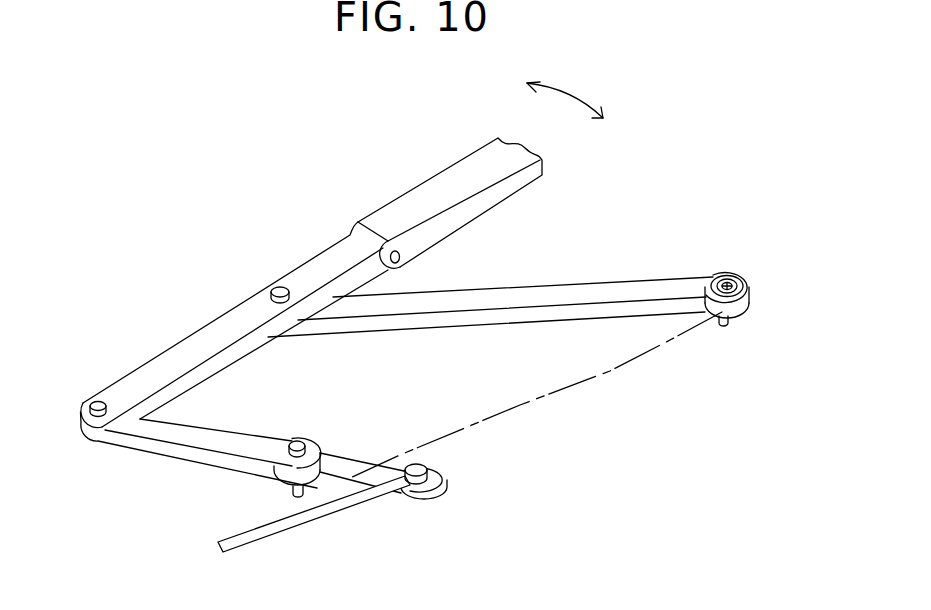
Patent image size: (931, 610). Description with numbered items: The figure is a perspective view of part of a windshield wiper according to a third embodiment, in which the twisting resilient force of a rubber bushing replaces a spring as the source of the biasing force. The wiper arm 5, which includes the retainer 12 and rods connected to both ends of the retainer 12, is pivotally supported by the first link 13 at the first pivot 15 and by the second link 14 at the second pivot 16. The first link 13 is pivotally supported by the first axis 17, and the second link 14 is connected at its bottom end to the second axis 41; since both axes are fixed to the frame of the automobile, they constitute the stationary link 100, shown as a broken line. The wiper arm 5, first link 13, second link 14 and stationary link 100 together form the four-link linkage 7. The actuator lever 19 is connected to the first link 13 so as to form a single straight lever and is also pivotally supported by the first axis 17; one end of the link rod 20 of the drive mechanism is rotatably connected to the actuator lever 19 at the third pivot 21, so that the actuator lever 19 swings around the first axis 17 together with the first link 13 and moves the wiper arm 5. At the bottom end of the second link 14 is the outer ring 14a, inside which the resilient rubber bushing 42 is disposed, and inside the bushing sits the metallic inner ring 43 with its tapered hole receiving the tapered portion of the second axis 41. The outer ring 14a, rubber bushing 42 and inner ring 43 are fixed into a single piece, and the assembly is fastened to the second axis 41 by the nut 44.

The wiper arm 5 is at (399, 176).
The four-link linkage 7 is at (155, 463).
The retainer 12 is at (328, 258).
The first link 13 is at (228, 442).
The second link 14 is at (590, 288).
The outer ring 14a is at (747, 300).
The first pivot 15 is at (98, 400).
The second pivot 16 is at (276, 290).
The first axis 17 is at (298, 440).
The actuator lever 19 is at (352, 465).
The link rod 20 is at (285, 530).
The third pivot 21 is at (425, 468).
The second axis 41 is at (726, 281).
The resilient rubber bushing 42 is at (746, 276).
The metallic inner ring 43 is at (712, 278).
The nut 44 is at (719, 314).
The stationary link 100 is at (606, 370).